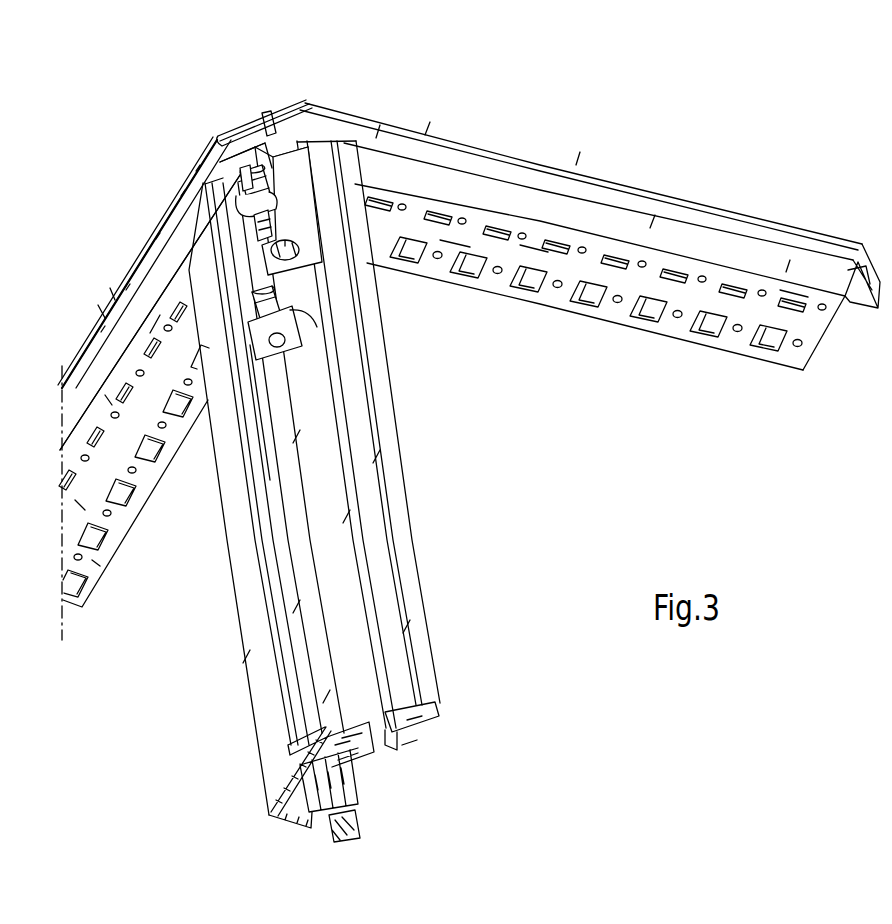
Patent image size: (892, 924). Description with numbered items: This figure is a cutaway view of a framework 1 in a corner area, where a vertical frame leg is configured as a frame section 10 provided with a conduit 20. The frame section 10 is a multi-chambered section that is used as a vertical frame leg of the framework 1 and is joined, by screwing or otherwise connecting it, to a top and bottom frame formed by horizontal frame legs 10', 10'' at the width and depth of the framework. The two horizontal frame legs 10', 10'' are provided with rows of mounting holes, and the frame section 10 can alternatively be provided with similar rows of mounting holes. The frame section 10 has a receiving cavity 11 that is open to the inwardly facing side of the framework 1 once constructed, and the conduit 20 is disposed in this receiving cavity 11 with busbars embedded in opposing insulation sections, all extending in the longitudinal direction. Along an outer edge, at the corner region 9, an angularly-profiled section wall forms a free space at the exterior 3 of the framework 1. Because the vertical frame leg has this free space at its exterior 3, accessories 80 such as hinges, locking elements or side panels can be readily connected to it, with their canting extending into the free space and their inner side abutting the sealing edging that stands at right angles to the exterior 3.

The framework 1 is at (146, 229).
The exterior 3 is at (105, 275).
The corner region 9 is at (252, 118).
The frame section 10 is at (314, 497).
The horizontal frame leg 10' is at (590, 264).
The horizontal frame leg 10'' is at (150, 390).
The receiving cavity 11 is at (292, 770).
The conduit 20 is at (352, 826).
The accessories 80 is at (226, 142).